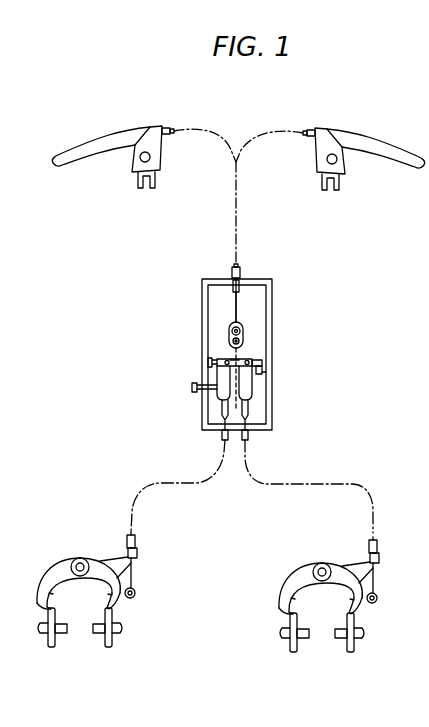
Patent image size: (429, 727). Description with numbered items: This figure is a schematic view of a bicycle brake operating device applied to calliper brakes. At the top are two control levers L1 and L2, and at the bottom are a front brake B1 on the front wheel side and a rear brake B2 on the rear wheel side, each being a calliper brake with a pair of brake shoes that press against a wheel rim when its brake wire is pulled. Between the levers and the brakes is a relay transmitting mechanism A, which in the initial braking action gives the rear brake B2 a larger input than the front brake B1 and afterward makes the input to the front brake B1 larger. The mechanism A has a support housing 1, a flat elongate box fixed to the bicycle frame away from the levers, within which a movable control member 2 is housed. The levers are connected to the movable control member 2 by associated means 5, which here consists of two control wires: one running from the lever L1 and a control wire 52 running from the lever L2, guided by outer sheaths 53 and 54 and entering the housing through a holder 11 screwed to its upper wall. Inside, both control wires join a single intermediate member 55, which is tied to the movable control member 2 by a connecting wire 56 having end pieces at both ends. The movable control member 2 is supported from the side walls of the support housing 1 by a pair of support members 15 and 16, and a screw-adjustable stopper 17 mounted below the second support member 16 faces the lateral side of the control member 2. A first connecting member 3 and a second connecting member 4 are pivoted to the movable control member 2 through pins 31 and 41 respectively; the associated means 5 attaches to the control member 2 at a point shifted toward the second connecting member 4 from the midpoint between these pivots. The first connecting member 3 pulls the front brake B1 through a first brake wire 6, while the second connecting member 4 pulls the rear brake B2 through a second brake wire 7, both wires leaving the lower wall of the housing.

The support housing 1 is at (277, 288).
The movable control member 2 is at (253, 389).
The first connecting member 3 is at (248, 412).
The second connecting member 4 is at (218, 412).
The associated means 5 is at (240, 213).
The first brake wire 6 is at (246, 448).
The second brake wire 7 is at (223, 450).
The holder 11 is at (242, 276).
The support member 15 is at (260, 373).
The second support member 16 is at (210, 360).
The stopper 17 is at (203, 385).
The pin 31 is at (258, 366).
The pin 41 is at (221, 360).
The control wire 52 is at (271, 131).
The outer sheath 53 is at (176, 128).
The outer sheath 54 is at (307, 129).
The intermediate member 55 is at (243, 335).
The connecting wire 56 is at (250, 363).
The relay transmitting mechanism A is at (282, 298).
The control lever L1 is at (126, 127).
The control lever L2 is at (363, 130).
The front brake B1 is at (305, 568).
The rear brake B2 is at (66, 562).